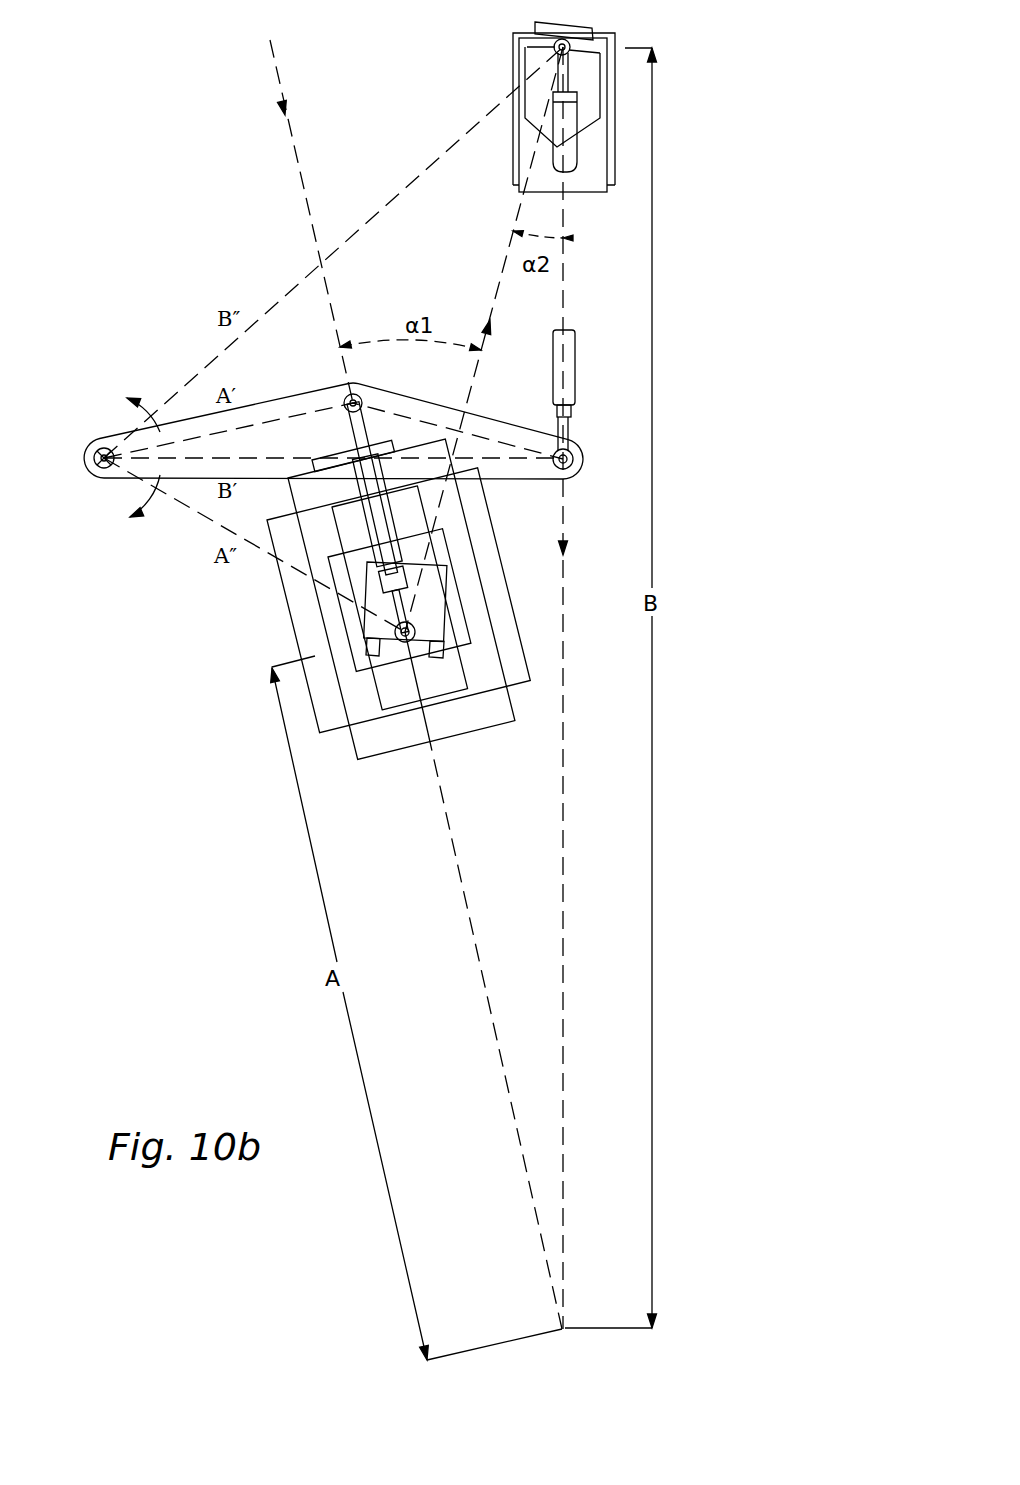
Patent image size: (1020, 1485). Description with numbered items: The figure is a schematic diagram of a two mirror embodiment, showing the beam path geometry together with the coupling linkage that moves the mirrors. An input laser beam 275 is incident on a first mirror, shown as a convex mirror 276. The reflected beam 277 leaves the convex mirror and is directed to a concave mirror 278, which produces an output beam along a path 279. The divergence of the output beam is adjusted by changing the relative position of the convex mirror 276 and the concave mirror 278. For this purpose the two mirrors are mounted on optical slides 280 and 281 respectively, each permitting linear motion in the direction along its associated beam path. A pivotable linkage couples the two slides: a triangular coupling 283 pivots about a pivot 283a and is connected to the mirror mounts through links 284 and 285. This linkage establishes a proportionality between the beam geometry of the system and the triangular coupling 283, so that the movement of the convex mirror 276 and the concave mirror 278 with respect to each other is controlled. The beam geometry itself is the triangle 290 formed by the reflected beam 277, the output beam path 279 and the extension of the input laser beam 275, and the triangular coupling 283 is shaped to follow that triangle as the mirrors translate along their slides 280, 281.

The input laser beam 275 is at (305, 203).
The convex mirror 276 is at (400, 643).
The reflected beam 277 is at (503, 267).
The concave mirror 278 is at (582, 43).
The output beam path 279 is at (565, 728).
The optical slide 280 is at (355, 622).
The optical slide 281 is at (595, 155).
The triangular coupling 283 is at (308, 450).
The pivot 283a is at (94, 458).
The link 284 is at (383, 570).
The link 285 is at (578, 352).
The triangle 290 is at (520, 808).